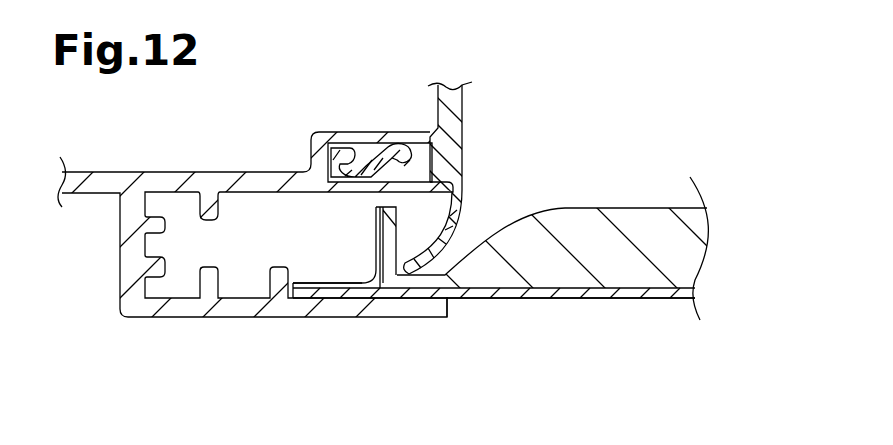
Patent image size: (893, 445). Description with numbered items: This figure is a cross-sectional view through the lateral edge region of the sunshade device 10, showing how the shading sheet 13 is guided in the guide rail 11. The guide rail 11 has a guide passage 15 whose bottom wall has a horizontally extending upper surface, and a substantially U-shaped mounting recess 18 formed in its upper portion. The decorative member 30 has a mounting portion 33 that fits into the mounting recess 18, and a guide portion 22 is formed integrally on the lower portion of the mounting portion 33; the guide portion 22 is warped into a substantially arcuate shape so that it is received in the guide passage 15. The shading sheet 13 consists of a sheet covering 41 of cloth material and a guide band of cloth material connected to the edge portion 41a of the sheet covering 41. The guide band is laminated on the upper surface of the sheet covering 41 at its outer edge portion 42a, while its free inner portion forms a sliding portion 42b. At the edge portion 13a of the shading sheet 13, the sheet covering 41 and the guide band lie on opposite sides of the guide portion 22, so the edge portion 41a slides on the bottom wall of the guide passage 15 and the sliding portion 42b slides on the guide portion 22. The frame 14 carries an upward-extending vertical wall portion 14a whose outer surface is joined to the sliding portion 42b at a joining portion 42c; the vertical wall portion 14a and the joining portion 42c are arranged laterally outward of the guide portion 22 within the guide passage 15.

The sunshade device 10 is at (552, 141).
The guide rail 11 is at (293, 319).
The shading sheet 13 is at (494, 314).
The edge portion 13a is at (354, 300).
The frame 14 is at (573, 217).
The vertical wall portion 14a is at (398, 209).
The guide passage 15 is at (347, 252).
The mounting recess 18 is at (356, 182).
The guide portion 22 is at (457, 277).
The decorative member 30 is at (464, 101).
The mounting portion 33 is at (394, 141).
The sheet covering 41 is at (553, 300).
The edge portion 41a is at (323, 299).
The outer edge portion 42a is at (334, 299).
The sliding portion 42b is at (376, 248).
The joining portion 42c is at (348, 246).